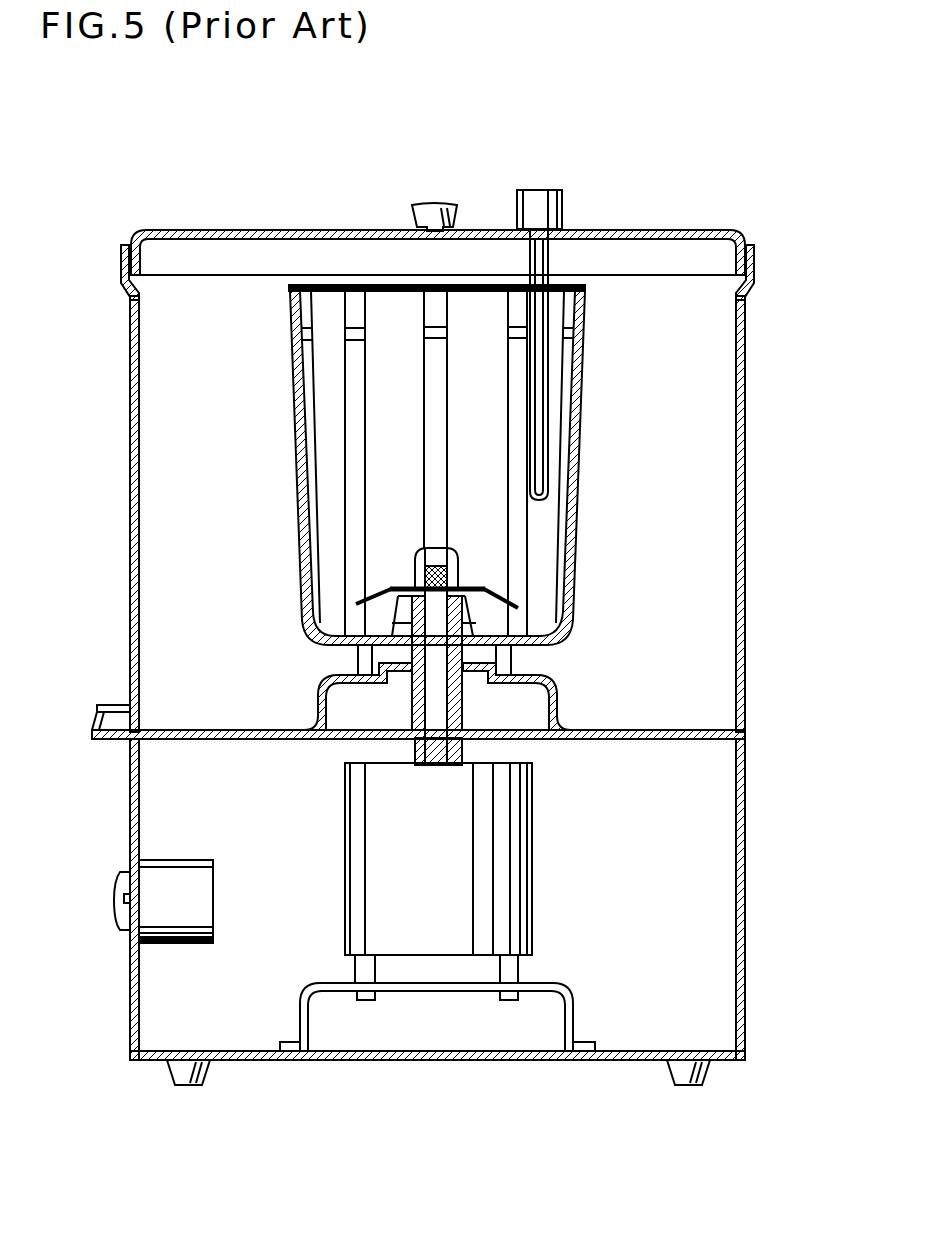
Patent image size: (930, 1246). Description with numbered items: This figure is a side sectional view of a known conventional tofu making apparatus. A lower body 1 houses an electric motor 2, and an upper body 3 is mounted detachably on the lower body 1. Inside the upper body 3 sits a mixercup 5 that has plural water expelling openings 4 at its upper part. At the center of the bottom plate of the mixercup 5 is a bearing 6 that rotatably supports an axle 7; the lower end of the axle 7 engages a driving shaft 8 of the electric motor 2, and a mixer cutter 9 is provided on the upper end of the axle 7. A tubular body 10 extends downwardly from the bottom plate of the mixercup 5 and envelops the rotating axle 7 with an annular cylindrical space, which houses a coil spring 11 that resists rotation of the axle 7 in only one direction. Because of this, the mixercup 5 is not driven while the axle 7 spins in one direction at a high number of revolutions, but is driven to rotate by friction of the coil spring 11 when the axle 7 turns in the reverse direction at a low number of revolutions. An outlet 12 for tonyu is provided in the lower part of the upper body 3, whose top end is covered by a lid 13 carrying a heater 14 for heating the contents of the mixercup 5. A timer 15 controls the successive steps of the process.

The lower body 1 is at (746, 812).
The electric motor 2 is at (456, 940).
The upper body 3 is at (746, 350).
The water expelling openings 4 is at (523, 333).
The mixercup 5 is at (586, 420).
The bearing 6 is at (574, 642).
The axle 7 is at (476, 623).
The driving shaft 8 is at (436, 766).
The mixer cutter 9 is at (466, 583).
The tubular body 10 is at (407, 703).
The coil spring 11 is at (467, 655).
The outlet 12 is at (100, 718).
The lid 13 is at (246, 231).
The heater 14 is at (560, 191).
The timer 15 is at (170, 918).